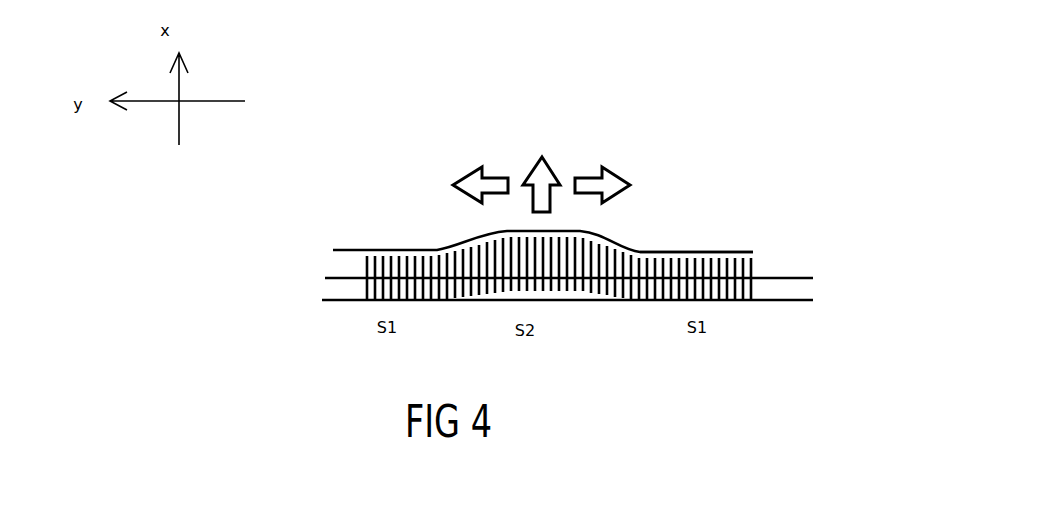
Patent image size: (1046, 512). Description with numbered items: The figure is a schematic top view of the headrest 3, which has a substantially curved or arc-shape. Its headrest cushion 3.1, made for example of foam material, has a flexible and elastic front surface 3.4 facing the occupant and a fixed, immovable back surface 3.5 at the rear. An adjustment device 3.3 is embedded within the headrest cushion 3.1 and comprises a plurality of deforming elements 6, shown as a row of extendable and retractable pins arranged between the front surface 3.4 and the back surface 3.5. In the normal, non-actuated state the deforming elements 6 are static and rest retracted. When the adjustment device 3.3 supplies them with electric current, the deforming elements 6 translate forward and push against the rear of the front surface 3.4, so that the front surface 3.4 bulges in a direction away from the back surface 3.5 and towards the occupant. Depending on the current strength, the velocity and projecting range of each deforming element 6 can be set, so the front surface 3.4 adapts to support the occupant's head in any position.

The headrest 3 is at (629, 204).
The headrest cushion 3.1 is at (380, 232).
The adjustment device 3.3 is at (723, 273).
The front surface 3.4 is at (722, 250).
The back surface 3.5 is at (767, 303).
The deforming elements 6 is at (660, 270).